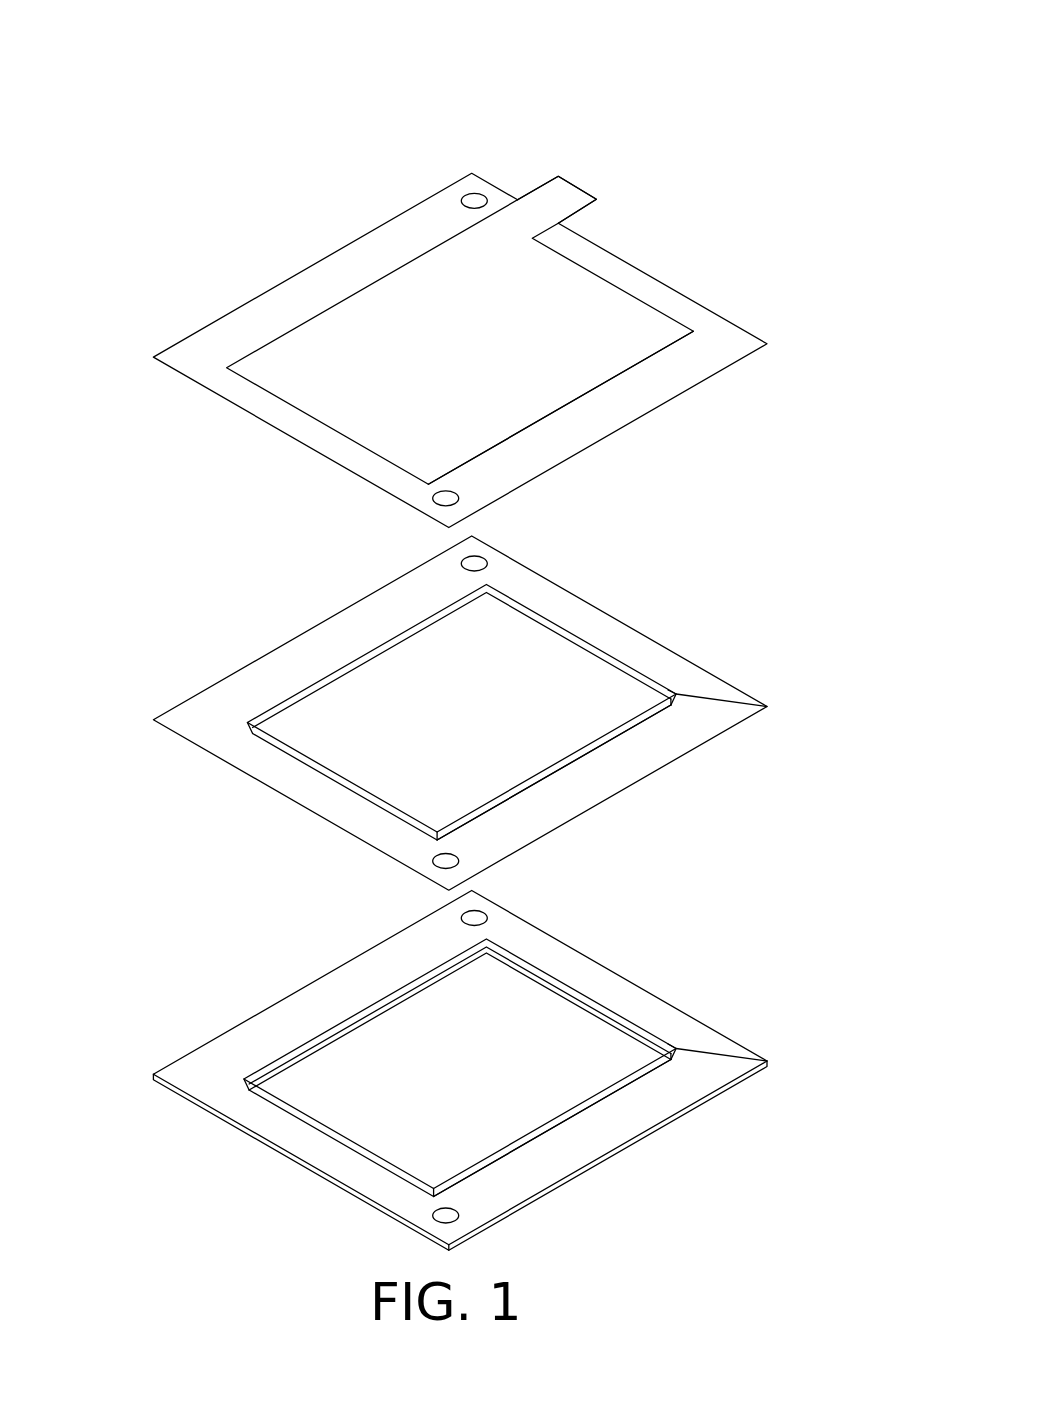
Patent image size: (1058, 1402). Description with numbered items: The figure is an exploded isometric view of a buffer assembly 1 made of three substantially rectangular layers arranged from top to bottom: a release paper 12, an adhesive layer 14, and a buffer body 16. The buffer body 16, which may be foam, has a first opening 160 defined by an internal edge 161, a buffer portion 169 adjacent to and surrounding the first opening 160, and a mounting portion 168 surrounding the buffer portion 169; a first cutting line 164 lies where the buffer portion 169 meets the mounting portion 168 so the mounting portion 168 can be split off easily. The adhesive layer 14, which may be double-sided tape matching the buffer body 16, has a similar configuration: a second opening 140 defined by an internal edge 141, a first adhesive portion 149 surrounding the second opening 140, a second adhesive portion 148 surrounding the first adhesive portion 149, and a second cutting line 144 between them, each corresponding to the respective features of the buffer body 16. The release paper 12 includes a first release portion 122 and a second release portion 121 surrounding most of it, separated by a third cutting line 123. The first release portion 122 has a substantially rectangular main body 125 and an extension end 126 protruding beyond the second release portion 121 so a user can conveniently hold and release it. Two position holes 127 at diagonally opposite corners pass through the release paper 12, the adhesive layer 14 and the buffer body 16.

The buffer assembly 1 is at (493, 31).
The release paper 12 is at (665, 270).
The second release portion 121 is at (640, 396).
The first release portion 122 is at (365, 107).
The third cutting line 123 is at (528, 428).
The main body 125 is at (440, 270).
The extension end 126 is at (563, 198).
The position holes 127 is at (440, 1212).
The adhesive layer 14 is at (711, 650).
The second opening 140 is at (545, 648).
The internal edge 141 is at (597, 658).
The second cutting line 144 is at (596, 775).
The second adhesive portion 148 is at (724, 707).
The first adhesive portion 149 is at (654, 712).
The buffer body 16 is at (547, 913).
The first opening 160 is at (540, 1000).
The internal edge 161 is at (598, 1015).
The first cutting line 164 is at (612, 1130).
The mounting portion 168 is at (714, 1047).
The buffer portion 169 is at (648, 1068).